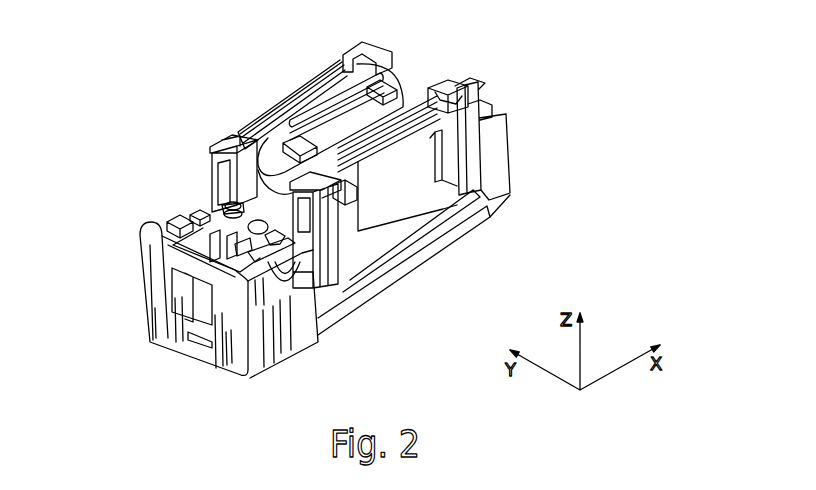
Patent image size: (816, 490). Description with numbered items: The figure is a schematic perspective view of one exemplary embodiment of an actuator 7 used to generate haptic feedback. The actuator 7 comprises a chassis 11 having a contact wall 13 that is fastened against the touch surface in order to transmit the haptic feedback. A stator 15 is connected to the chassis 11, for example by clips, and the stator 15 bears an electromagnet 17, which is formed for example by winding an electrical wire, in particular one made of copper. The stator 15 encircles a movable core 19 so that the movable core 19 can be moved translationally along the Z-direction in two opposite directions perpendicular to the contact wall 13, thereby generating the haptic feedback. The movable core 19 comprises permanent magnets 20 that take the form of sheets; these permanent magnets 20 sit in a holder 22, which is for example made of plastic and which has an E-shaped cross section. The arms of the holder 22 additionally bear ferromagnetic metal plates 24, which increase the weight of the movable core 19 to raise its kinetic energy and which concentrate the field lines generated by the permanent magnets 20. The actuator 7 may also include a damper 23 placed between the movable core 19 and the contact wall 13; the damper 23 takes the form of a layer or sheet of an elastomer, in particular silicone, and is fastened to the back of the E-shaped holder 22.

The actuator 7 is at (163, 155).
The chassis 11 is at (493, 157).
The contact wall 13 is at (387, 275).
The stator 15 is at (395, 78).
The electromagnet 17 is at (270, 187).
The movable core 19 is at (340, 241).
The permanent magnets 20 is at (330, 80).
The holder 22 is at (228, 146).
The damper 23 is at (417, 237).
The ferromagnetic metal plates 24 is at (267, 110).